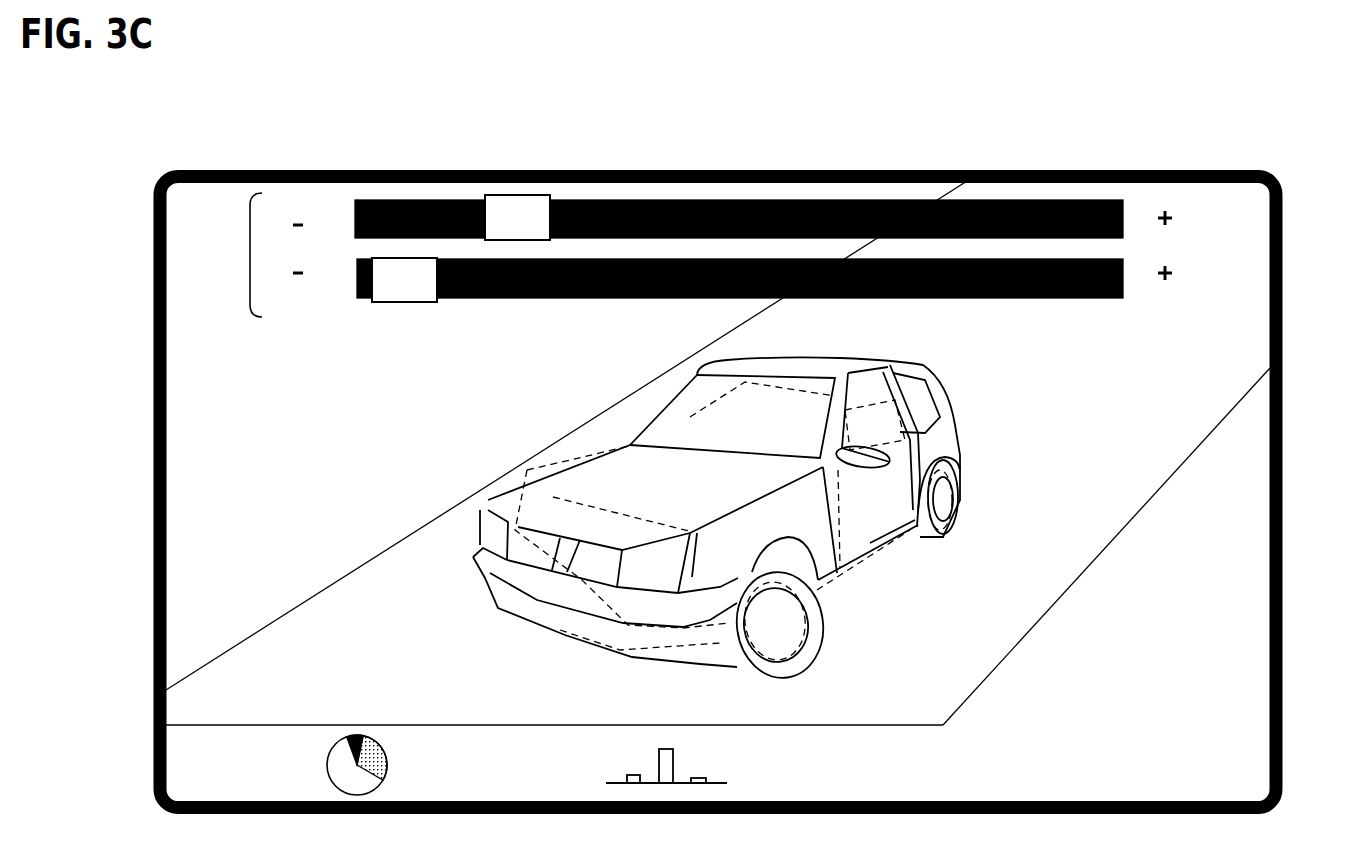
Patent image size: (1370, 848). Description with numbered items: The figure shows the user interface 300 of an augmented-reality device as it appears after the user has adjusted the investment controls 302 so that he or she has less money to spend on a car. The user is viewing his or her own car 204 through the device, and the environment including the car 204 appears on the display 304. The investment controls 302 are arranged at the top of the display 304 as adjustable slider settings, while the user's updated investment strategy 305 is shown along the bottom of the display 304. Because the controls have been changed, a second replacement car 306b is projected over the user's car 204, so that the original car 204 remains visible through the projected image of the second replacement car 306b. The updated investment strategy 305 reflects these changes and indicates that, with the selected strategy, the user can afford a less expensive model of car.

The user interface 300 is at (1258, 107).
The investment controls 302 is at (248, 254).
The display 304 is at (1237, 687).
The investment strategy 305 is at (243, 770).
The car 204 is at (925, 543).
The second replacement car 306b is at (925, 362).